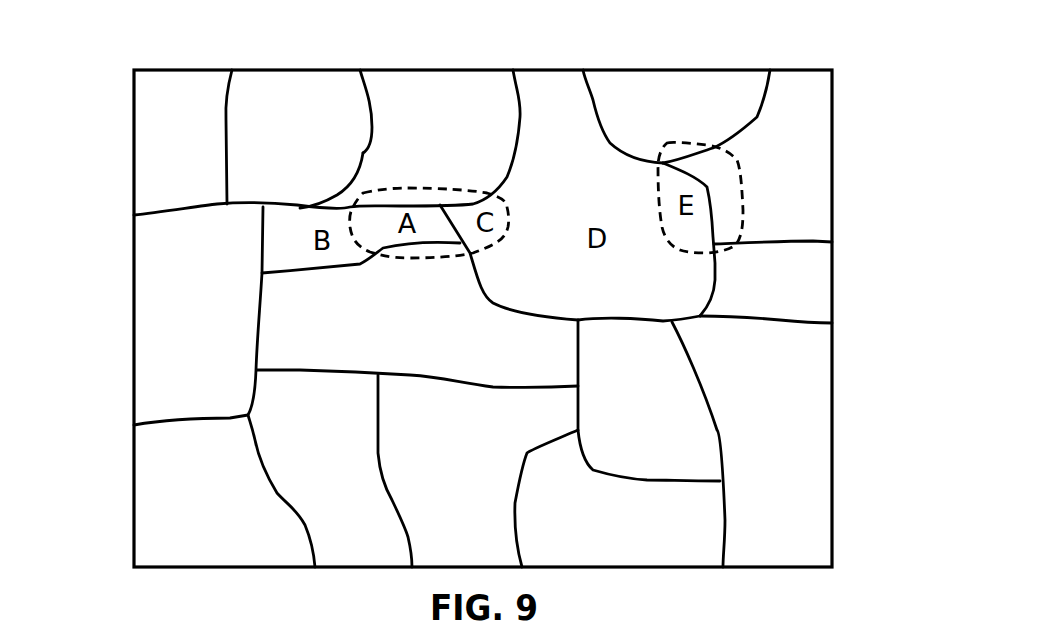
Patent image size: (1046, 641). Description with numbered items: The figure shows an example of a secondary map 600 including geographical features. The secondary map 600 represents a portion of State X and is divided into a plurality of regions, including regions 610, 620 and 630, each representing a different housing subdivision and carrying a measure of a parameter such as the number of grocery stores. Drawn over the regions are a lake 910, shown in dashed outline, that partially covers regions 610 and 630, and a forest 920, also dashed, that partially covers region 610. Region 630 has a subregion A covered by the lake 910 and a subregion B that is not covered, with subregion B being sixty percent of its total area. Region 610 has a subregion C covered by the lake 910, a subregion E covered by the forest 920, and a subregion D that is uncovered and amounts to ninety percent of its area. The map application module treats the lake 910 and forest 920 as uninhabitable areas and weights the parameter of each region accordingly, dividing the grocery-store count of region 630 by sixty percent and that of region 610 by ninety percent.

The secondary map 600 is at (833, 197).
The region 610 is at (560, 188).
The region 620 is at (795, 277).
The region 630 is at (323, 214).
The lake 910 is at (415, 190).
The forest 920 is at (685, 142).